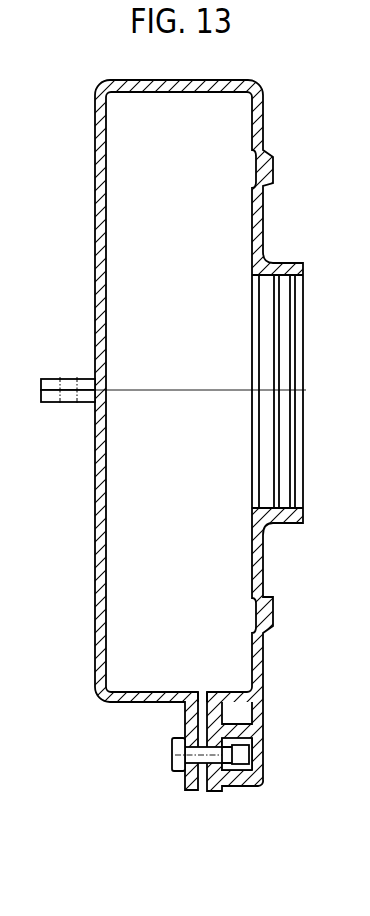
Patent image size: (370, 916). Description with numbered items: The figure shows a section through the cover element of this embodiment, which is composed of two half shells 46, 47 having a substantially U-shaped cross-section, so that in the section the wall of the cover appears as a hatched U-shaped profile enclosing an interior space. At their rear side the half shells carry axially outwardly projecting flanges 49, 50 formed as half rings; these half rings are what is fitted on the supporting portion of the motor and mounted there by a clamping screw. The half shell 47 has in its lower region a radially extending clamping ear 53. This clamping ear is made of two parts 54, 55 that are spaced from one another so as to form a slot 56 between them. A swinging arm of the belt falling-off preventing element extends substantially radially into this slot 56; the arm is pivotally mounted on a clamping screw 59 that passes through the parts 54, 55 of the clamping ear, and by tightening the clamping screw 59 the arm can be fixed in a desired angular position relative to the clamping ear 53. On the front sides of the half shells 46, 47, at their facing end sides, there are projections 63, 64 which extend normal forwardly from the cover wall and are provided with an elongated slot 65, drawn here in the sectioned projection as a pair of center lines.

The half shell 46 is at (98, 229).
The half shell 47 is at (98, 555).
The flange 49 is at (285, 263).
The flange 50 is at (283, 523).
The clamping ear 53 is at (175, 782).
The part of clamping ear 54 is at (187, 717).
The part of clamping ear 55 is at (212, 786).
The slot 56 is at (203, 701).
The clamping screw 59 is at (172, 753).
The projection 63 is at (51, 382).
The projection 64 is at (52, 399).
The elongated slot 65 is at (70, 379).